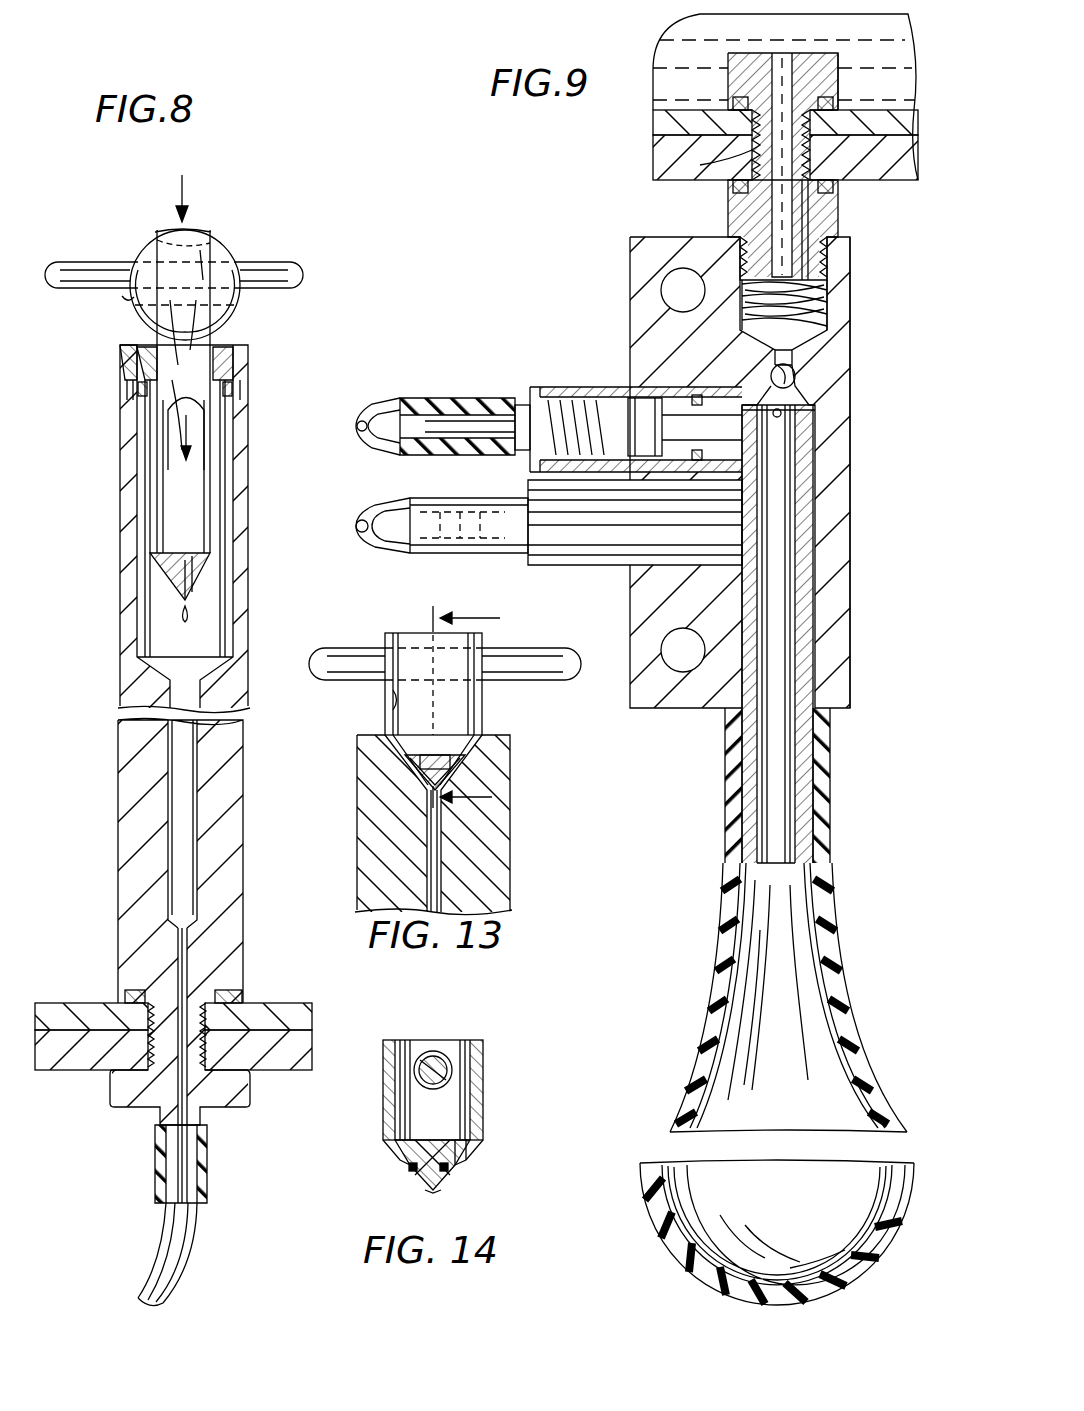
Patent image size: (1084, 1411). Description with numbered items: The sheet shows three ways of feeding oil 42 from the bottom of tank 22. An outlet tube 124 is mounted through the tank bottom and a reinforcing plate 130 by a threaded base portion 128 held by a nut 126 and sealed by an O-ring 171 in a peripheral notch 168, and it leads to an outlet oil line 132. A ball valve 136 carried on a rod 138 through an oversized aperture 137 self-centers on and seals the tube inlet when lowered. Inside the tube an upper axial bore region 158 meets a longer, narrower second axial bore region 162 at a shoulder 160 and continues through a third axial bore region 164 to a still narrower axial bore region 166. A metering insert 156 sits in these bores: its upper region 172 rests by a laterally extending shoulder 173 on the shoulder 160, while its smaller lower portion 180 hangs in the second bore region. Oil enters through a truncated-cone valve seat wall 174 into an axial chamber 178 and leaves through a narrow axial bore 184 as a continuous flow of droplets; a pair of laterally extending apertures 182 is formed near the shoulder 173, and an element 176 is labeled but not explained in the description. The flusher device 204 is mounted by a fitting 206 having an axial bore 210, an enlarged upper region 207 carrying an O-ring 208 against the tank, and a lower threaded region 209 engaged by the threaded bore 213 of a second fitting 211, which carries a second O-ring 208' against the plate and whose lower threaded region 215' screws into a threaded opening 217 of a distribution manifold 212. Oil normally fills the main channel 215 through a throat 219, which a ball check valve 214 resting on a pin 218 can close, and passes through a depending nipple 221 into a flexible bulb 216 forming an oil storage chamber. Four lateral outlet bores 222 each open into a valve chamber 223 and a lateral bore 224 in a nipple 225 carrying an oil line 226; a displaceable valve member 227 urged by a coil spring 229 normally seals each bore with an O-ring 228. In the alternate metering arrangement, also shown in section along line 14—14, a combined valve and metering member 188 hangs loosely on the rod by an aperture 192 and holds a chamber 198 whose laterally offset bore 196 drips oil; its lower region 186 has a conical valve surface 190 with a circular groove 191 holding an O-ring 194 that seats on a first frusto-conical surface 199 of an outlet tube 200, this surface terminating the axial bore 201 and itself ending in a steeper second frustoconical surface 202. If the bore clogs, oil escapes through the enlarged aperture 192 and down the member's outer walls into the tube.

In FIG. 8, the oil 42 is at (192, 240).
In FIG. 9, the oil 42 is at (692, 28).
In FIG. 8, the ball valve 136 is at (220, 258).
In FIG. 8, the rod 138 is at (292, 278).
In FIG. 13, the rod 138 is at (538, 657).
In FIG. 14, the rod 138 is at (434, 1052).
In FIG. 8, the aperture 137 is at (124, 300).
In FIG. 8, the upper axial bore region 158 is at (132, 352).
In FIG. 8, the shoulder 160 is at (128, 372).
In FIG. 8, the valve seat wall 174 is at (222, 348).
In FIG. 8, the upper region 172 is at (244, 364).
In FIG. 8, the laterally extending shoulder 173 is at (242, 396).
In FIG. 8, the laterally extending apertures 182 is at (140, 396).
In FIG. 8, the lower portion 180 is at (223, 446).
In FIG. 8, the second axial bore region 162 is at (142, 508).
In FIG. 8, the outlet tube 124 is at (250, 486).
In FIG. 8, the axial chamber 178 is at (186, 463).
In FIG. 8, the sleeve 176 is at (198, 540).
In FIG. 8, the metering insert 156 is at (212, 566).
In FIG. 8, the axial bore 184 is at (192, 600).
In FIG. 8, the third axial bore region 164 is at (182, 798).
In FIG. 8, the narrower axial bore region 166 is at (188, 950).
In FIG. 8, the O-ring 171 is at (128, 993).
In FIG. 8, the peripheral notch 168 is at (243, 996).
In FIG. 8, the tank 22 is at (304, 1017).
In FIG. 9, the tank 22 is at (653, 118).
In FIG. 8, the reinforcing plate 130 is at (305, 1056).
In FIG. 9, the reinforcing plate 130 is at (653, 146).
In FIG. 8, the nut 126 is at (250, 1097).
In FIG. 8, the threaded base portion 128 is at (212, 1118).
In FIG. 8, the outlet oil line 132 is at (200, 1249).
In FIG. 9, the axial bore 210 is at (786, 54).
In FIG. 9, the upper region 207 is at (824, 53).
In FIG. 9, the fitting 206 is at (842, 64).
In FIG. 9, the O-ring 208 is at (816, 94).
In FIG. 9, the lower threaded region 209 is at (745, 155).
In FIG. 9, the second O-ring 208' is at (751, 203).
In FIG. 9, the axial threaded bore 213 is at (840, 207).
In FIG. 9, the second fitting 211 is at (840, 226).
In FIG. 9, the lower threaded region 215' is at (829, 260).
In FIG. 9, the threaded opening 217 is at (830, 312).
In FIG. 9, the ball check valve 214 is at (797, 372).
In FIG. 9, the distribution manifold 212 is at (848, 394).
In FIG. 9, the pin 218 is at (802, 418).
In FIG. 9, the throat 219 is at (773, 352).
In FIG. 9, the O-ring 228 is at (697, 396).
In FIG. 9, the displaceable valve member 227 is at (648, 400).
In FIG. 9, the valve chamber 223 is at (592, 395).
In FIG. 9, the coil spring 229 is at (548, 395).
In FIG. 9, the lateral bore 224 is at (522, 408).
In FIG. 9, the nipple 225 is at (492, 400).
In FIG. 9, the oil line 226 is at (412, 400).
In FIG. 9, the outlet bore 222 is at (712, 455).
In FIG. 9, the main channel 215 is at (825, 634).
In FIG. 9, the flusher device 204 is at (850, 706).
In FIG. 9, the nipple 221 is at (800, 820).
In FIG. 9, the bulb 216 is at (720, 912).
In FIG. 13, the aperture 192 is at (415, 640).
In FIG. 14, the aperture 192 is at (450, 1052).
In FIG. 13, the section line 14 is at (491, 709).
In FIG. 13, the chamber 198 is at (395, 702).
In FIG. 14, the chamber 198 is at (450, 1104).
In FIG. 13, the valve and metering member 188 is at (486, 701).
In FIG. 14, the valve and metering member 188 is at (486, 1068).
In FIG. 13, the second frustoconical surface 202 is at (385, 732).
In FIG. 13, the O-ring 194 is at (410, 760).
In FIG. 14, the O-ring 194 is at (412, 1173).
In FIG. 13, the first frusto-conical surface 199 is at (462, 778).
In FIG. 13, the axial bore 201 is at (427, 826).
In FIG. 13, the outlet tube 200 is at (372, 866).
In FIG. 14, the circular groove 191 is at (436, 1143).
In FIG. 14, the bore 196 is at (468, 1152).
In FIG. 14, the lower region 186 is at (398, 1150).
In FIG. 14, the conical valve surface 190 is at (444, 1188).